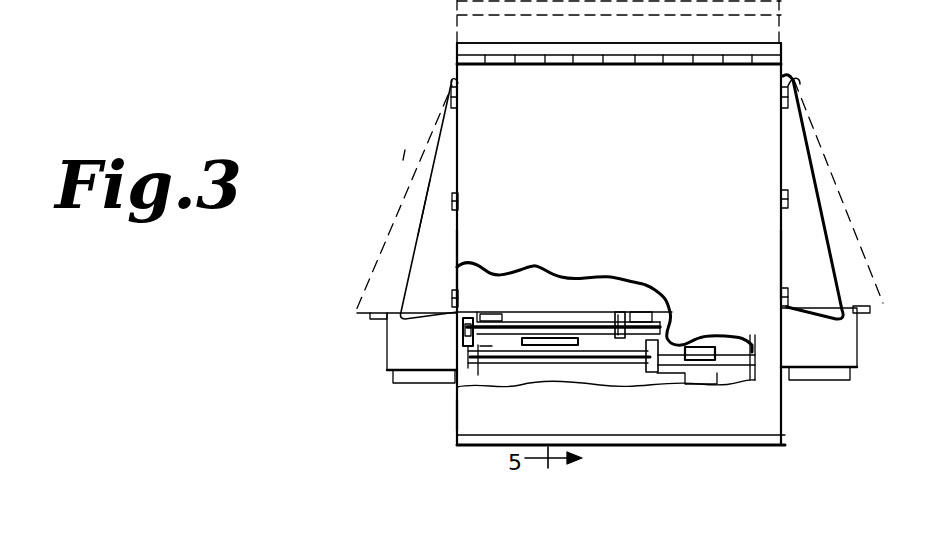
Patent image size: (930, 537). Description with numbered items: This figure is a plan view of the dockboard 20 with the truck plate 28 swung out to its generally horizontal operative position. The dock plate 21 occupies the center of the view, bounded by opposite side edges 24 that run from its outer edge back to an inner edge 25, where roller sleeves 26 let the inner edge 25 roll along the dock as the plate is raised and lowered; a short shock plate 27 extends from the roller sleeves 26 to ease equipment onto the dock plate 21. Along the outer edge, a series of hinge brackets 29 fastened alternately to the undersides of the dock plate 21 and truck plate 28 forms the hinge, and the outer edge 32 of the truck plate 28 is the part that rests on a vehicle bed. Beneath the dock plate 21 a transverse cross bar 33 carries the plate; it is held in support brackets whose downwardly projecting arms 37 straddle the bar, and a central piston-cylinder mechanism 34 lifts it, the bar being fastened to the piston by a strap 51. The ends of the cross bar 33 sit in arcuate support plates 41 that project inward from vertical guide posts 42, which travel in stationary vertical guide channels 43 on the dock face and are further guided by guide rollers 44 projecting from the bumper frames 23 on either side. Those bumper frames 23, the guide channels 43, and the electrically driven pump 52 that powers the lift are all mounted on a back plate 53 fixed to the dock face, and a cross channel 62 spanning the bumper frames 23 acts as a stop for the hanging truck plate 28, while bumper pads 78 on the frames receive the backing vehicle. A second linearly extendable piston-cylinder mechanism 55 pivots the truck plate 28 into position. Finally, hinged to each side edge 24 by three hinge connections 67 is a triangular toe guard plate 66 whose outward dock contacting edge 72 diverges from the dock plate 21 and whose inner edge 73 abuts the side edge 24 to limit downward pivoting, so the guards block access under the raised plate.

The dockboard 20 is at (405, 150).
The dock plate 21 is at (576, 153).
The bumper frames 23 is at (383, 340).
The side edges 24 is at (462, 232).
The inner edge 25 is at (537, 58).
The roller sleeves 26 is at (643, 60).
The shock plate 27 is at (707, 43).
The truck plate 28 is at (472, 410).
The hinge brackets 29 is at (700, 345).
The outer edge of truck plate 32 is at (686, 437).
The cross bar 33 is at (520, 312).
The piston-cylinder mechanism 34 is at (625, 312).
The arms 37 is at (503, 343).
The arcuate support plates 41 is at (487, 346).
The vertical guide posts 42 is at (468, 323).
The vertical guide channels 43 is at (512, 312).
The guide rollers 44 is at (460, 333).
The strap 51 is at (643, 320).
The pump 52 is at (557, 323).
The back plate 53 is at (373, 313).
The piston-cylinder mechanism 55 is at (647, 358).
The cross channel 62 is at (522, 360).
The toe guard plate 66 is at (432, 221).
The hinge connections 67 is at (450, 88).
The dock contacting edge 72 is at (412, 171).
The inner edges 73 is at (447, 113).
The bumper pads 78 is at (410, 387).